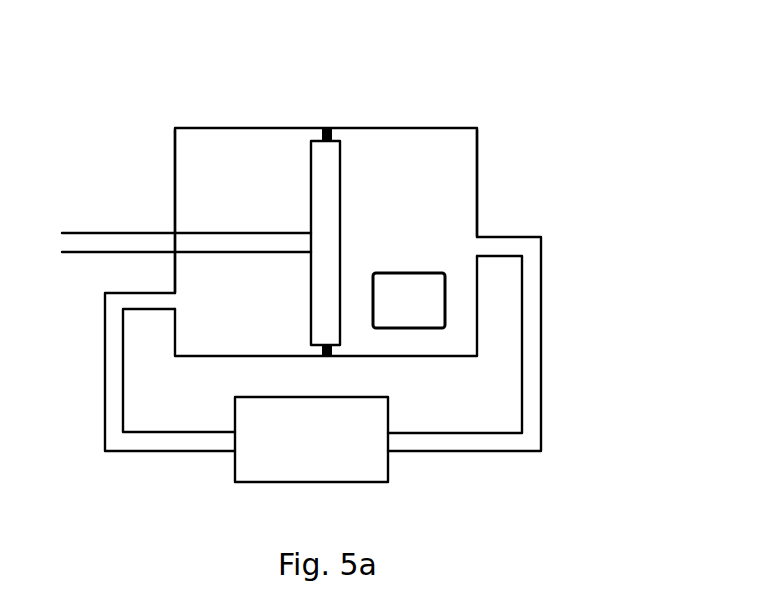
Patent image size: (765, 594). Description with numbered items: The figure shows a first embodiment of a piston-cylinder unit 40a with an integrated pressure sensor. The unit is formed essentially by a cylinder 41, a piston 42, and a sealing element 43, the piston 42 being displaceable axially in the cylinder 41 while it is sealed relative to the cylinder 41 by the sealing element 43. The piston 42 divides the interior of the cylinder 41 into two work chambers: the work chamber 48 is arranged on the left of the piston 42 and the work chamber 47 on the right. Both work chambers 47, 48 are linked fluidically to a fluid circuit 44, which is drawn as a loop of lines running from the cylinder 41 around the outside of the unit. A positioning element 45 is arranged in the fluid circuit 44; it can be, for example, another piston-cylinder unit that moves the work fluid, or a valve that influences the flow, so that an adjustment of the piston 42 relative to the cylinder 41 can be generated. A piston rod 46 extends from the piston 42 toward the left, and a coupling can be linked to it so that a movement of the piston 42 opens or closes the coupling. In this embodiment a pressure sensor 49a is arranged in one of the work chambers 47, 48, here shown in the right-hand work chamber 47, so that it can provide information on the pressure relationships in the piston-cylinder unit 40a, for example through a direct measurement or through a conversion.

The piston-cylinder unit 40a is at (522, 49).
The cylinder 41 is at (418, 128).
The piston 42 is at (312, 157).
The sealing element 43 is at (338, 127).
The fluid circuit 44 is at (465, 441).
The positioning element 45 is at (315, 460).
The piston rod 46 is at (111, 232).
The work chamber 47 is at (463, 157).
The work chamber 48 is at (200, 157).
The pressure sensor 49a is at (412, 292).